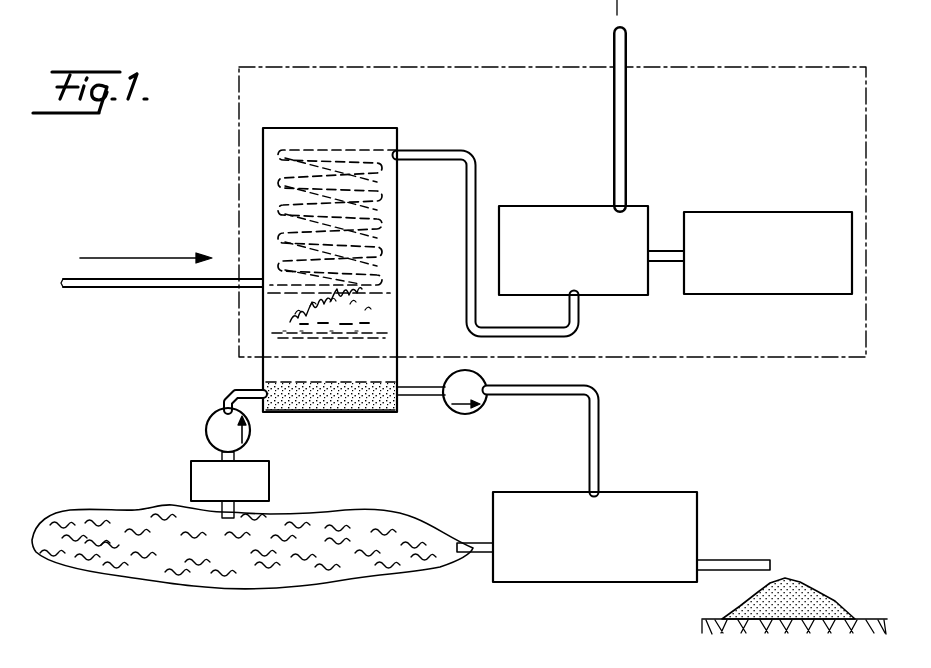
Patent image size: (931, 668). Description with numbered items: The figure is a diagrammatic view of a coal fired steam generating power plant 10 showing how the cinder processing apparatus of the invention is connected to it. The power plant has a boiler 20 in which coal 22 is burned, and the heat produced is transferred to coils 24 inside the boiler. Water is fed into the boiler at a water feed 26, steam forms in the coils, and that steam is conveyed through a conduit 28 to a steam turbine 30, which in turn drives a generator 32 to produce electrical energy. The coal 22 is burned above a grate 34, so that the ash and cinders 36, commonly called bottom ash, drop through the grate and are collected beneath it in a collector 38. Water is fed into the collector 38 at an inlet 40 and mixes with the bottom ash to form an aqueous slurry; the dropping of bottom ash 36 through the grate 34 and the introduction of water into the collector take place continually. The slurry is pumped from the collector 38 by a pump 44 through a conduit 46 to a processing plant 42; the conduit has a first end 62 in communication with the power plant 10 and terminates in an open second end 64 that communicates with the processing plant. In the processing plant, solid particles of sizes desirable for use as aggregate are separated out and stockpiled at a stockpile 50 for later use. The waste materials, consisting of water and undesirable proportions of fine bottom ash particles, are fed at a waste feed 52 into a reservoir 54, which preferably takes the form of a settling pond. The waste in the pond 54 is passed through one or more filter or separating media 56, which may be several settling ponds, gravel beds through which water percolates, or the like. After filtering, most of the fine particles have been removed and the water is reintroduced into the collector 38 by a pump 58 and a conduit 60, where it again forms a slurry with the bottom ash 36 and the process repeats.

The coal fired steam generating power plant 10 is at (325, 67).
The boiler 20 is at (350, 128).
The coal 22 is at (382, 315).
The coils 24 is at (275, 176).
The water feed 26 is at (84, 316).
The conduit 28 is at (434, 150).
The steam turbine 30 is at (538, 206).
The generator 32 is at (698, 212).
The grate 34 is at (383, 336).
The ash and cinders (bottom ash) 36 is at (348, 413).
The collector 38 is at (300, 413).
The inlet 40 is at (263, 392).
The processing plant 42 is at (681, 492).
The pump 44 is at (485, 398).
The conduit 46 is at (600, 419).
The stockpile 50 is at (808, 580).
The waste feed 52 is at (480, 543).
The reservoir (settling pond) 54 is at (370, 566).
The filter or separating media 56 is at (191, 475).
The pump 58 is at (207, 425).
The conduit 60 is at (242, 395).
The first end of conduit 62 is at (404, 397).
The second end of conduit 64 is at (600, 490).